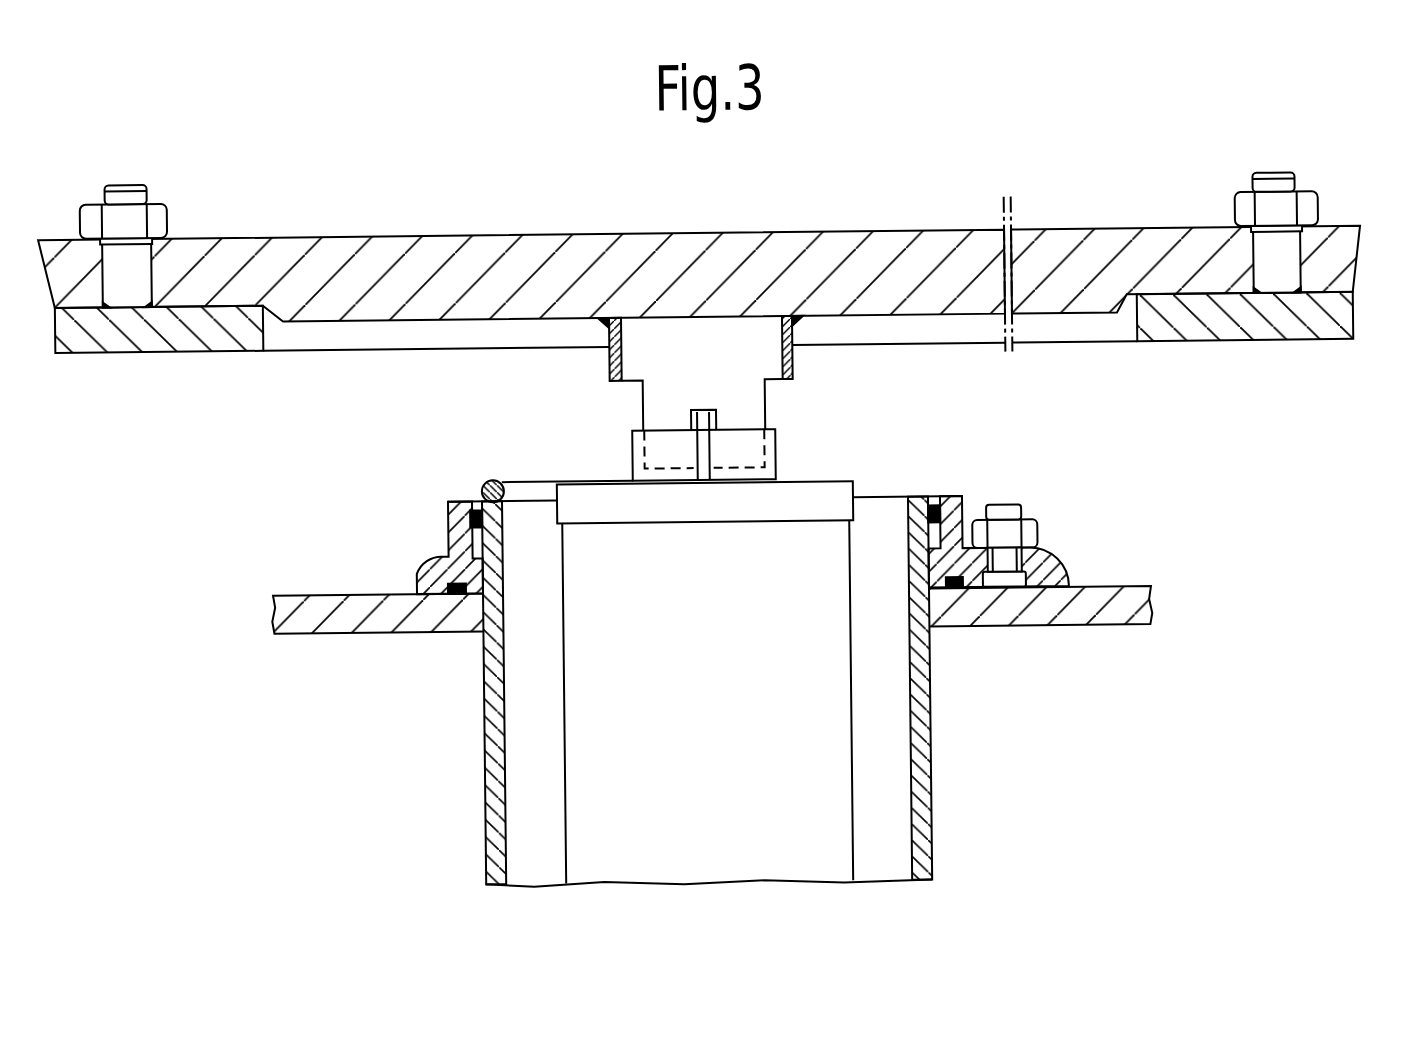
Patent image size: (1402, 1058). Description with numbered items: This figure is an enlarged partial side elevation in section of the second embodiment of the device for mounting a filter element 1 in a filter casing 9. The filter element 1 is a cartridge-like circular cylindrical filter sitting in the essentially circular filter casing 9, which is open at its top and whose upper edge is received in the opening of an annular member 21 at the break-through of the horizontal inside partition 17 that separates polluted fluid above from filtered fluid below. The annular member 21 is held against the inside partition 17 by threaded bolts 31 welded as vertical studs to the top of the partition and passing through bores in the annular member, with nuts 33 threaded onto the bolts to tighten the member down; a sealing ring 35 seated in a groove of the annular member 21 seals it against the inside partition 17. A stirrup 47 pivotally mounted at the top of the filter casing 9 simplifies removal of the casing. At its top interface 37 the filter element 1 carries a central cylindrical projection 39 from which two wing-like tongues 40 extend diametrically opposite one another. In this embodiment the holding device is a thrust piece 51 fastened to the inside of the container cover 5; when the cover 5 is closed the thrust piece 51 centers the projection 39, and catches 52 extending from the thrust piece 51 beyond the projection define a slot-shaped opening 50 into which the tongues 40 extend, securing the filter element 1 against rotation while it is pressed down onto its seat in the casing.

The filter element 1 is at (850, 774).
The container cover 5 is at (933, 252).
The filter casing 9 is at (920, 738).
The inside partition 17 is at (1118, 603).
The annular member 21 is at (1045, 572).
The threaded bolt 31 is at (999, 518).
The nut 33 is at (1028, 537).
The sealing ring 35 is at (957, 599).
The top interface 37 is at (815, 492).
The projection 39 is at (633, 429).
The tongue 40 is at (704, 440).
The stirrup 47 is at (484, 483).
The slot-shaped opening 50 is at (708, 420).
The thrust piece 51 is at (791, 361).
The catch 52 is at (633, 453).